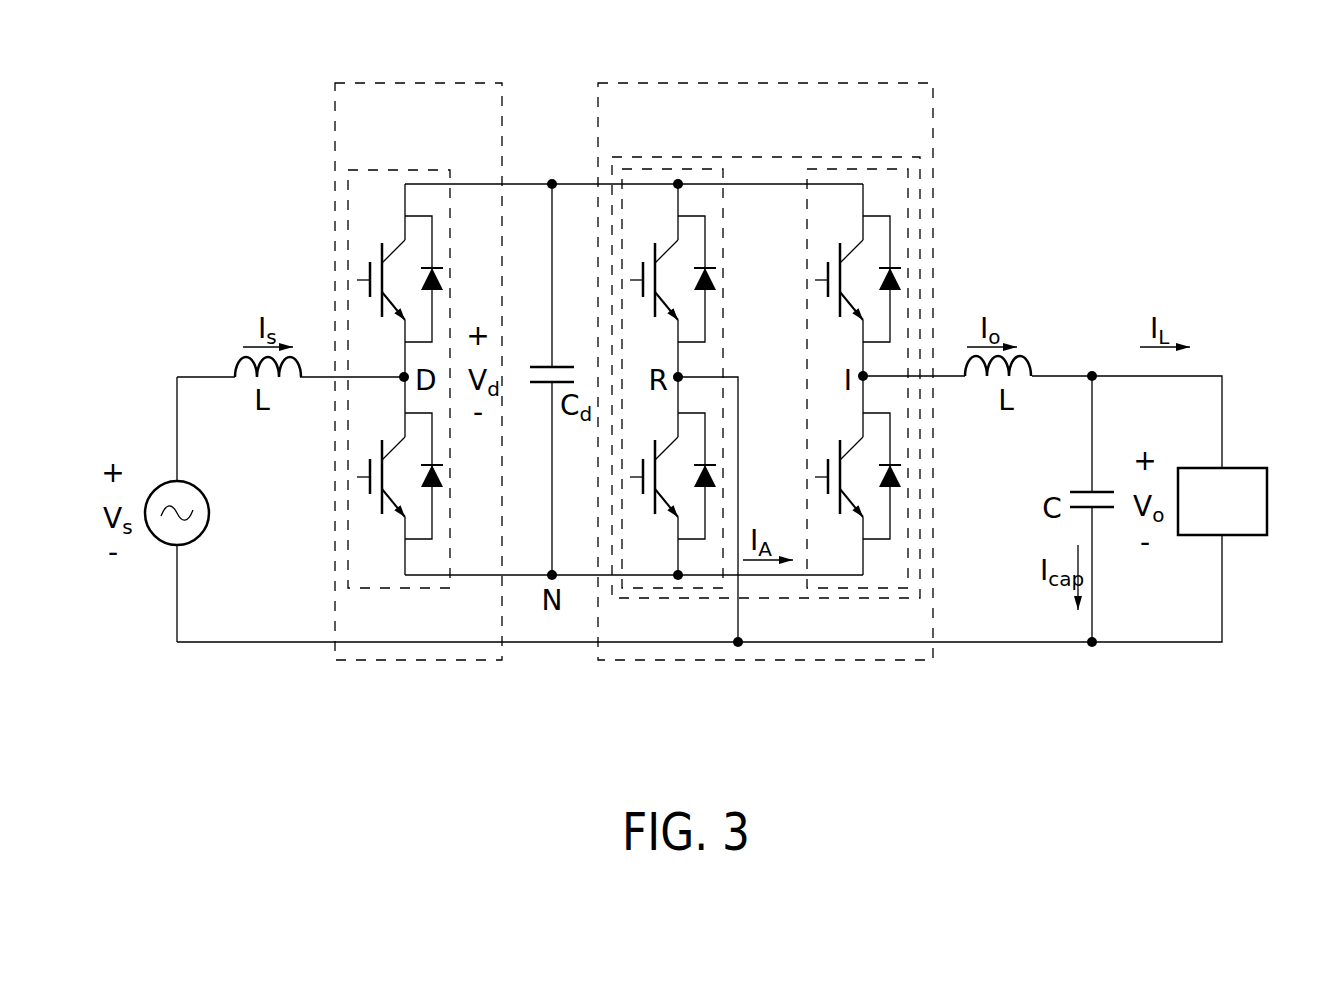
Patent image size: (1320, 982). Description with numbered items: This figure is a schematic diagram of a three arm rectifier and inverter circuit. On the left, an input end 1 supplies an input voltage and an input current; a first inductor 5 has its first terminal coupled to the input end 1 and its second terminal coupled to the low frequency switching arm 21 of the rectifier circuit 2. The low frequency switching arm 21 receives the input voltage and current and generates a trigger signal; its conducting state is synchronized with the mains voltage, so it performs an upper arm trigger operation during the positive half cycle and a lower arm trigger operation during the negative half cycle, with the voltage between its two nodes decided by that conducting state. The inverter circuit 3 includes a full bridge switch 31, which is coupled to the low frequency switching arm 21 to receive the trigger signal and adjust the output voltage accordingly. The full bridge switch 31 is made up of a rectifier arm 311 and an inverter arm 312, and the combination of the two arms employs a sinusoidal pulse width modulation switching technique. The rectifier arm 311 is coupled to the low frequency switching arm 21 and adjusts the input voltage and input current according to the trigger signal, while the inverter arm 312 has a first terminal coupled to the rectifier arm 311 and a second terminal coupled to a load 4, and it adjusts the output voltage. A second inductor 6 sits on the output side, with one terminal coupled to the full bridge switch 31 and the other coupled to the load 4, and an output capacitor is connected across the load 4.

The input end 1 is at (207, 501).
The rectifier circuit 2 is at (443, 82).
The low frequency switching arm 21 is at (408, 168).
The inverter circuit 3 is at (738, 82).
The full bridge switch 31 is at (775, 155).
The rectifier arm 311 is at (682, 168).
The inverter arm 312 is at (868, 168).
The load 4 is at (1267, 490).
The first inductor 5 is at (288, 383).
The second inductor 6 is at (978, 385).